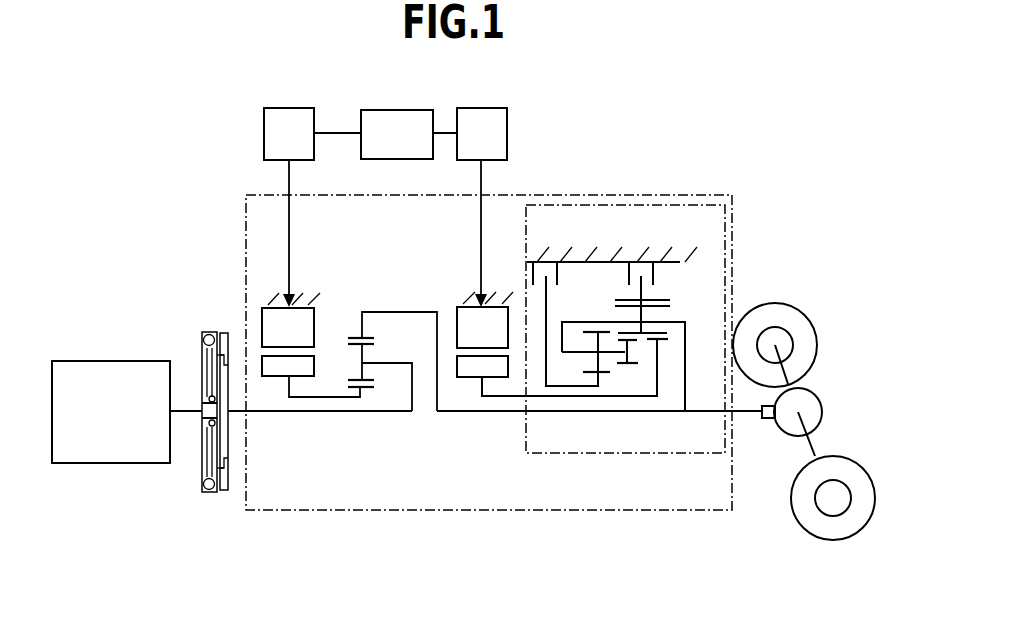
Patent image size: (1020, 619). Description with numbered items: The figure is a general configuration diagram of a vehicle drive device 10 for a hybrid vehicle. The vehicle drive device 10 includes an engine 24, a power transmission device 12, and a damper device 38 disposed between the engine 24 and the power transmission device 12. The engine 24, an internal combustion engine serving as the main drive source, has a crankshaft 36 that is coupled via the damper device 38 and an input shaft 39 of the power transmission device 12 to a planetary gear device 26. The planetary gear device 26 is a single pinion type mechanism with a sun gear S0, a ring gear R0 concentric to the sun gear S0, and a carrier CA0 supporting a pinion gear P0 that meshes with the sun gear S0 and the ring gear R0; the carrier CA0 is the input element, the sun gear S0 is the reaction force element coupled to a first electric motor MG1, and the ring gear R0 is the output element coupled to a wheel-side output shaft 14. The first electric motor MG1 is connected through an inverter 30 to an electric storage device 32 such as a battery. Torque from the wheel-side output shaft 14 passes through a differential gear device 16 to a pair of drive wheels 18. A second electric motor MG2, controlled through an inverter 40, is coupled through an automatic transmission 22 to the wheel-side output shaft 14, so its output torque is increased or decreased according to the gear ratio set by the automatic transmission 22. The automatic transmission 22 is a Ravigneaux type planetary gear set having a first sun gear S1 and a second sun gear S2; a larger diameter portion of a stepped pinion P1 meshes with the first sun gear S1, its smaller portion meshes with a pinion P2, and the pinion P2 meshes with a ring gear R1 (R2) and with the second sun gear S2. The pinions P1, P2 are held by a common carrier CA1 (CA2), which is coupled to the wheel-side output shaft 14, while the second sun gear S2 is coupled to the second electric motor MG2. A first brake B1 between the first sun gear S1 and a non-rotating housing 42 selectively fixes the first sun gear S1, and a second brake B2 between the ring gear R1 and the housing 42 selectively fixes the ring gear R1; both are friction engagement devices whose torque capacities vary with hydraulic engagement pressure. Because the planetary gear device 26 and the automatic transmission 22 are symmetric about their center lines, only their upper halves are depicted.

The vehicle drive device 10 is at (668, 128).
The power transmission device 12 is at (386, 512).
The wheel-side output shaft 14 is at (750, 414).
The differential gear device 16 is at (810, 406).
The drive wheels 18 is at (806, 331).
The automatic transmission 22 is at (727, 233).
The engine 24 is at (107, 377).
The planetary gear device 26 is at (340, 424).
The inverter 30 is at (308, 112).
The electric storage device 32 is at (386, 113).
The crankshaft 36 is at (186, 413).
The damper device 38 is at (188, 348).
The input shaft 39 is at (267, 413).
The inverter 40 is at (490, 113).
The housing 42 is at (603, 252).
The first electric motor MG1 is at (291, 268).
The second electric motor MG2 is at (485, 268).
The ring gear R0 is at (357, 336).
The pinion gear P0 is at (358, 379).
The sun gear S0 is at (368, 389).
The carrier CA0 is at (376, 362).
The first brake B1 is at (546, 258).
The second brake B2 is at (647, 260).
The carrier CA1 is at (560, 332).
The carrier CA2 is at (582, 330).
The ring gear R1 is at (656, 299).
The ring gear R2 is at (666, 304).
The stepped pinion P1 is at (633, 365).
The pinion P2 is at (665, 312).
The first sun gear S1 is at (593, 378).
The second sun gear S2 is at (662, 341).